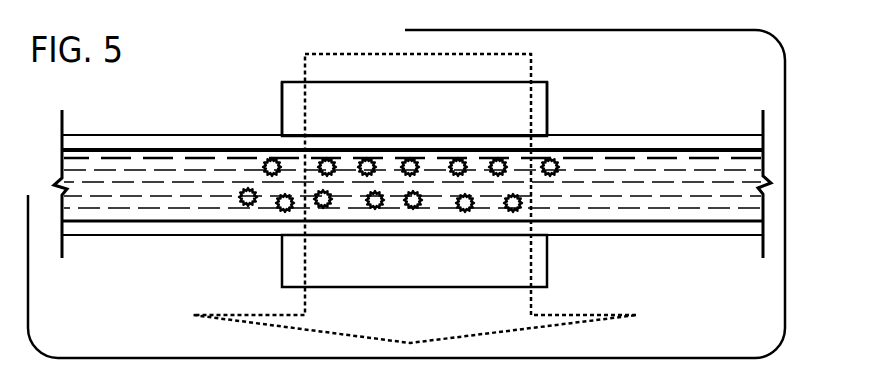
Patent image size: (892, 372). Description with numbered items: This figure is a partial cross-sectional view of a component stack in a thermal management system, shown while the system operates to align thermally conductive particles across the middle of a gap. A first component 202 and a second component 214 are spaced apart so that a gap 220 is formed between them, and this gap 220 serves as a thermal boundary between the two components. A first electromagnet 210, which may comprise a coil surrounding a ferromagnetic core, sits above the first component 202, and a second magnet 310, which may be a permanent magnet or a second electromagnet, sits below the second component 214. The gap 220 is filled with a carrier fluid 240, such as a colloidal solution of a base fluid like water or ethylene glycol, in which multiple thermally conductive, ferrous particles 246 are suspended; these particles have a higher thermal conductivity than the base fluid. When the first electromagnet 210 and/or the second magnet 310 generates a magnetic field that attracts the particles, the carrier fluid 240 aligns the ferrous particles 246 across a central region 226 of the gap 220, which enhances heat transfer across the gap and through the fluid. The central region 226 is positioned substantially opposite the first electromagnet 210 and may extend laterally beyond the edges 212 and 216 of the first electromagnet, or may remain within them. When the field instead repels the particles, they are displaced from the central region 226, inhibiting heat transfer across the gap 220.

The first component 202 is at (700, 142).
The first electromagnet 210 is at (490, 93).
The edge of the first electromagnet 212 is at (547, 95).
The second component 214 is at (747, 230).
The edge of the first electromagnet 216 is at (282, 108).
The gap 220 is at (48, 162).
The central region 226 is at (519, 188).
The carrier fluid 240 is at (114, 163).
The thermally conductive, ferrous particles 246 is at (498, 160).
The second magnet 310 is at (282, 268).